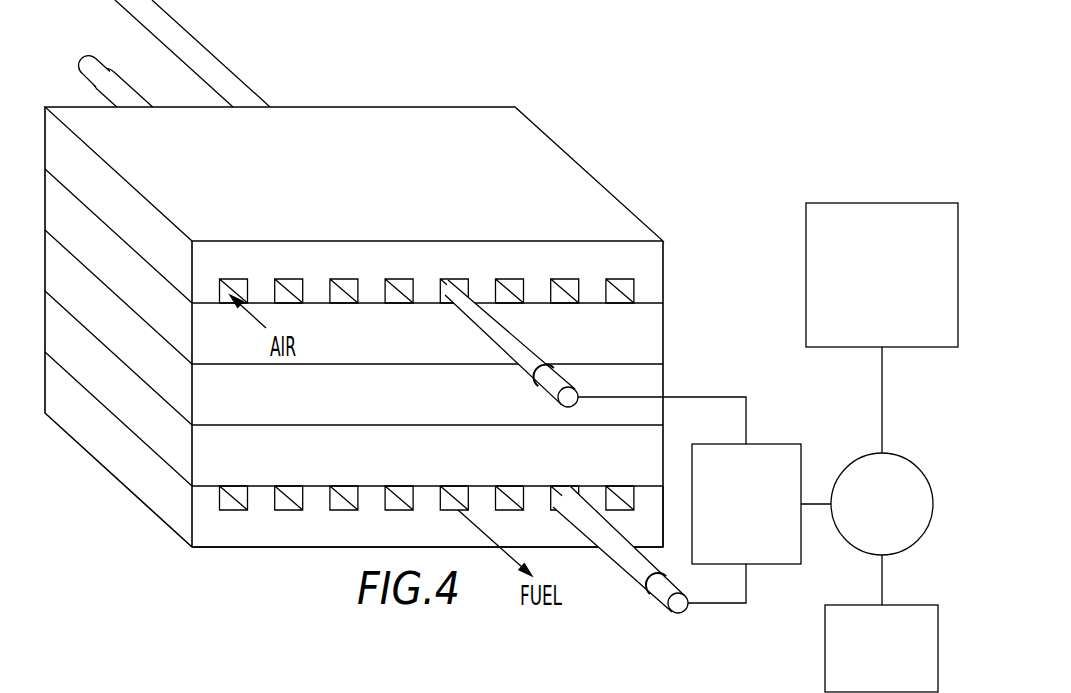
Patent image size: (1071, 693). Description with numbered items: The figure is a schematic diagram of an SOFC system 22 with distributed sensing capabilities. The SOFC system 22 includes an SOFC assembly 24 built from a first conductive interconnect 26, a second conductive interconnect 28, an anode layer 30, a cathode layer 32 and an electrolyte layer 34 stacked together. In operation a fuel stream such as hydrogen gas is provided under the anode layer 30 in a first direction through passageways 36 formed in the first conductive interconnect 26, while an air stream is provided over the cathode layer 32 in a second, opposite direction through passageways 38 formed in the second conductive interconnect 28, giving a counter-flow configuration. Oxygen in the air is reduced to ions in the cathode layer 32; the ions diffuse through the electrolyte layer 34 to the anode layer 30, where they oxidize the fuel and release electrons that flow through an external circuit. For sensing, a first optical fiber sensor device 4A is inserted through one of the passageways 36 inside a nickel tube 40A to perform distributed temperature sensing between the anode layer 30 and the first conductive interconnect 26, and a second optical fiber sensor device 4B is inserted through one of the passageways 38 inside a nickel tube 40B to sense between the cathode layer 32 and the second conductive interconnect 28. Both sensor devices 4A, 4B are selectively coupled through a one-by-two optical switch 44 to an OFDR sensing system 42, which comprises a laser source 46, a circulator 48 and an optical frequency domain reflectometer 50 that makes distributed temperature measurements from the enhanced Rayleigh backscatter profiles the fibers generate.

The SOFC system 22 is at (590, 110).
The SOFC assembly 24 is at (378, 70).
The first conductive interconnect 26 is at (652, 537).
The second conductive interconnect 28 is at (650, 253).
The anode layer 30 is at (645, 448).
The cathode layer 32 is at (640, 322).
The electrolyte layer 34 is at (647, 382).
The passageways 36 is at (346, 511).
The passageways 38 is at (394, 296).
The nickel tube 40A is at (620, 564).
The nickel tube 40B is at (499, 347).
The first optical fiber sensor device 4A is at (665, 593).
The second optical fiber sensor device 4B is at (555, 390).
The OFDR sensing system 42 is at (826, 415).
The optical switch 44 is at (773, 444).
The laser source 46 is at (825, 665).
The circulator 48 is at (907, 548).
The optical frequency domain reflectometer 50 is at (860, 203).